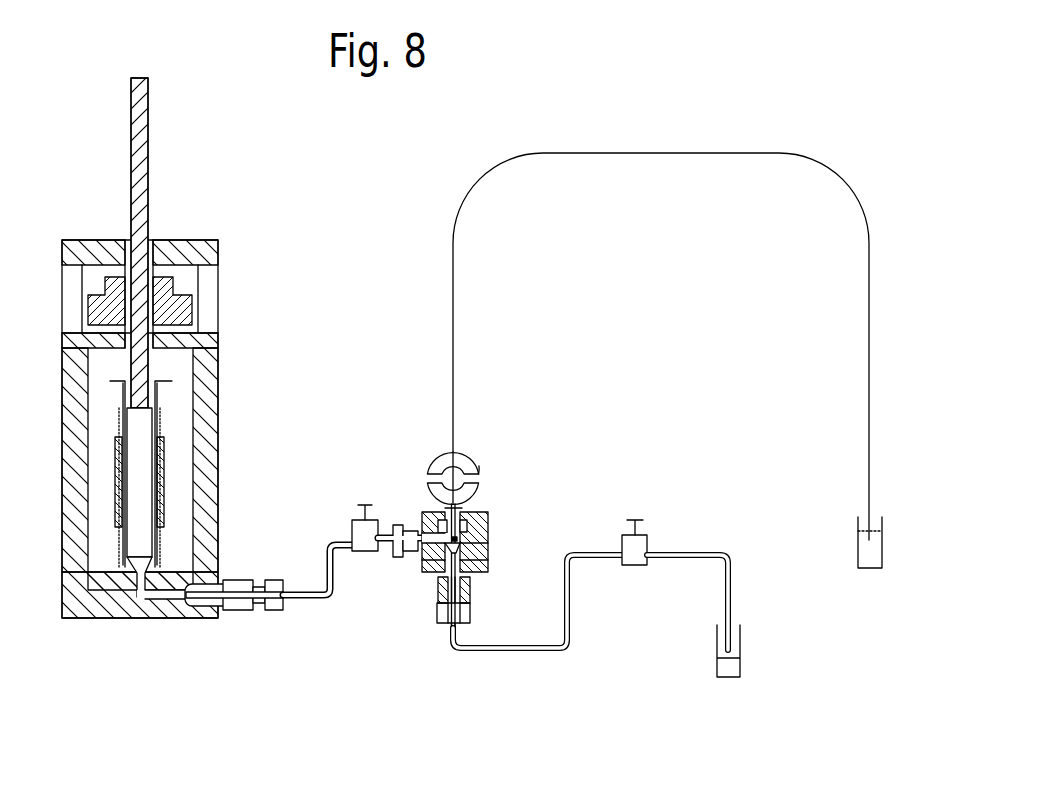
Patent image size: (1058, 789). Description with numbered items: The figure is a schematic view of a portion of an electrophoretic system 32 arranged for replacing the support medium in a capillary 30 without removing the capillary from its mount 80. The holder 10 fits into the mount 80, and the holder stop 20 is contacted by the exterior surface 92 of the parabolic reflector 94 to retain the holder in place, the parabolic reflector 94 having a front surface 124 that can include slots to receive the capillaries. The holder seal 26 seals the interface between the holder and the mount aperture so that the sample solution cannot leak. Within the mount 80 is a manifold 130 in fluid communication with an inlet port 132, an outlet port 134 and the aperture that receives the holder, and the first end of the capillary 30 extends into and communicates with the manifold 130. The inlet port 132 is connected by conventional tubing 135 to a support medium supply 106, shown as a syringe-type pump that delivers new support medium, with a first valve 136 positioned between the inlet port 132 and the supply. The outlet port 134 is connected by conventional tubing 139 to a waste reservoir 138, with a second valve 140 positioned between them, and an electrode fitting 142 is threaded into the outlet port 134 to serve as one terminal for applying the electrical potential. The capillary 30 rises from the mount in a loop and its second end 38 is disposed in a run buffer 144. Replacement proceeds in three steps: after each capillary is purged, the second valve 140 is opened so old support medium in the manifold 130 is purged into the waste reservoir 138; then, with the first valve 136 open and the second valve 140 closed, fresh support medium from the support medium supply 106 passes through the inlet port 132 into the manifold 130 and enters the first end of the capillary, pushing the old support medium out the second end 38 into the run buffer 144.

The holder 10 is at (500, 417).
The holder stop 20 is at (443, 508).
The holder seal 26 is at (482, 518).
The capillary 30 is at (453, 272).
The electrophoretic system 32 is at (432, 193).
The second end 38 is at (878, 534).
The mount 80 is at (427, 508).
The exterior surface 92 is at (466, 450).
The parabolic reflector 94 is at (455, 450).
The support medium supply 106 is at (218, 250).
The front surface 124 is at (480, 468).
The manifold 130 is at (462, 543).
The inlet port 132 is at (420, 548).
The outlet port 134 is at (466, 562).
The tubing 135 is at (327, 560).
The first valve 136 is at (355, 518).
The waste reservoir 138 is at (742, 670).
The tubing 139 is at (729, 552).
The second valve 140 is at (645, 535).
The electrode fitting 142 is at (472, 597).
The run buffer 144 is at (883, 566).